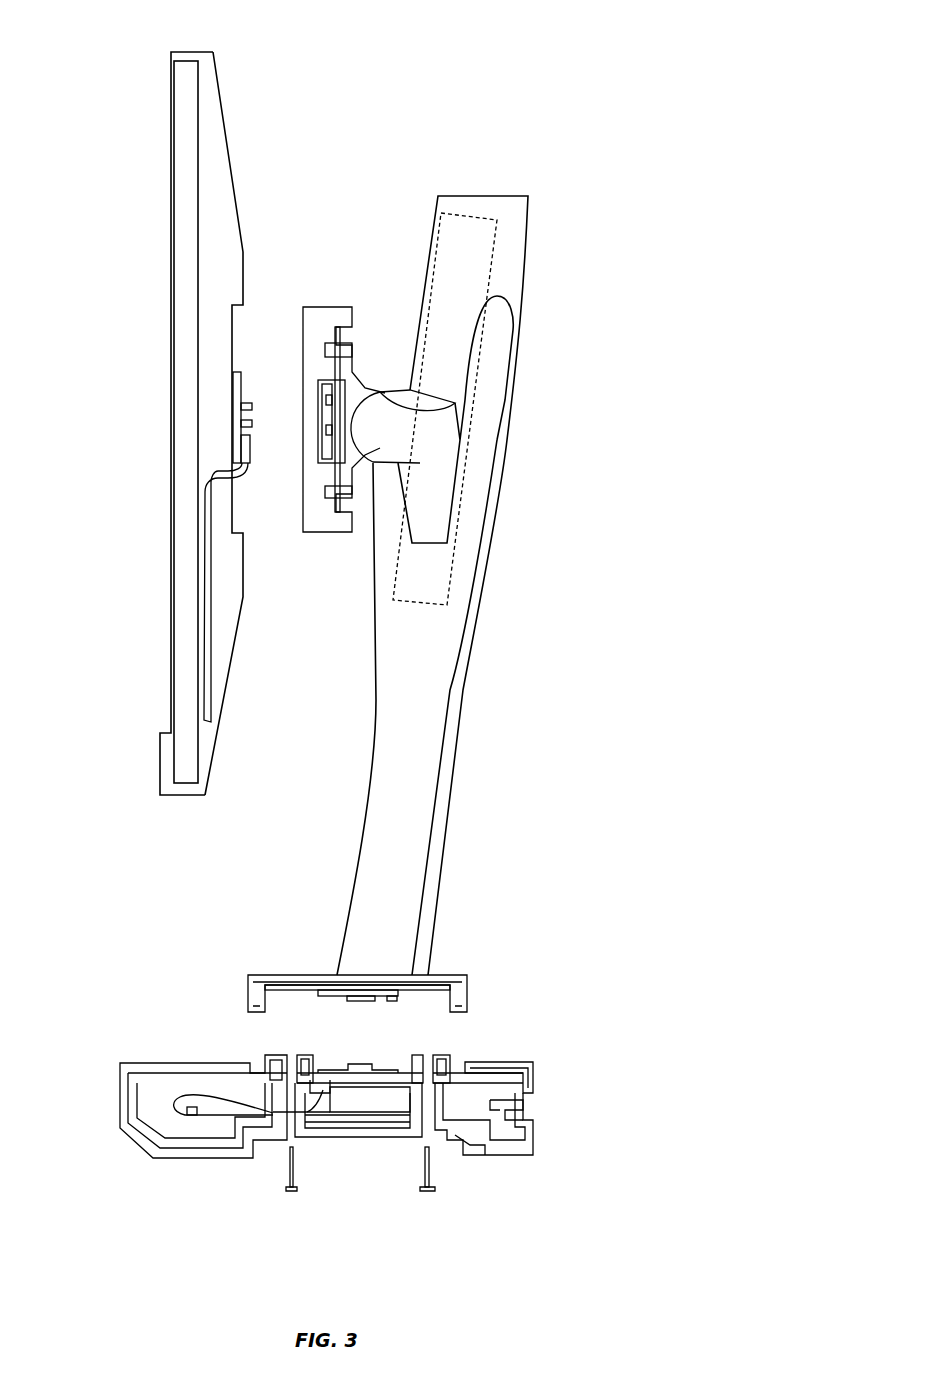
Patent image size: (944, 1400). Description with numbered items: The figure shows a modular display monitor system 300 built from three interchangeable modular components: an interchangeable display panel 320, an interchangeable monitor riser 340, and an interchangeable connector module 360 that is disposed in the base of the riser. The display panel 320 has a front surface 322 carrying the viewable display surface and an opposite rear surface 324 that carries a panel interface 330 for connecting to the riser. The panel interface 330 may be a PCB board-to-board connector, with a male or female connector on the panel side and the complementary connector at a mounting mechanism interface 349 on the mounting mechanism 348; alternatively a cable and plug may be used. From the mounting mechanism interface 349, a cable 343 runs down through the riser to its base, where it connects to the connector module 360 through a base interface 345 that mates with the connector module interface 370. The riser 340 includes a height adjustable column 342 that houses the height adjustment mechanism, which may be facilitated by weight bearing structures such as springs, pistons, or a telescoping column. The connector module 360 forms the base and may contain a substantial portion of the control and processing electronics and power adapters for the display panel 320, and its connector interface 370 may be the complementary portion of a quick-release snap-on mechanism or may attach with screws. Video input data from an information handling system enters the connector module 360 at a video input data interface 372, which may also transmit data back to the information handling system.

The modular display monitor system 300 is at (516, 92).
The interchangeable display panel 320 is at (171, 96).
The front surface 322 is at (145, 312).
The rear surface 324 is at (240, 153).
The panel interface 330 is at (251, 427).
The interchangeable monitor riser 340 is at (519, 351).
The height adjustable column 342 is at (528, 272).
The cable 343 is at (472, 563).
The base interface 345 is at (357, 998).
The mounting mechanism 348 is at (344, 306).
The mounting mechanism interface 349 is at (332, 413).
The interchangeable connector module 360 is at (505, 1063).
The connector module interface 370 is at (358, 1065).
The video input data interface 372 is at (523, 1106).